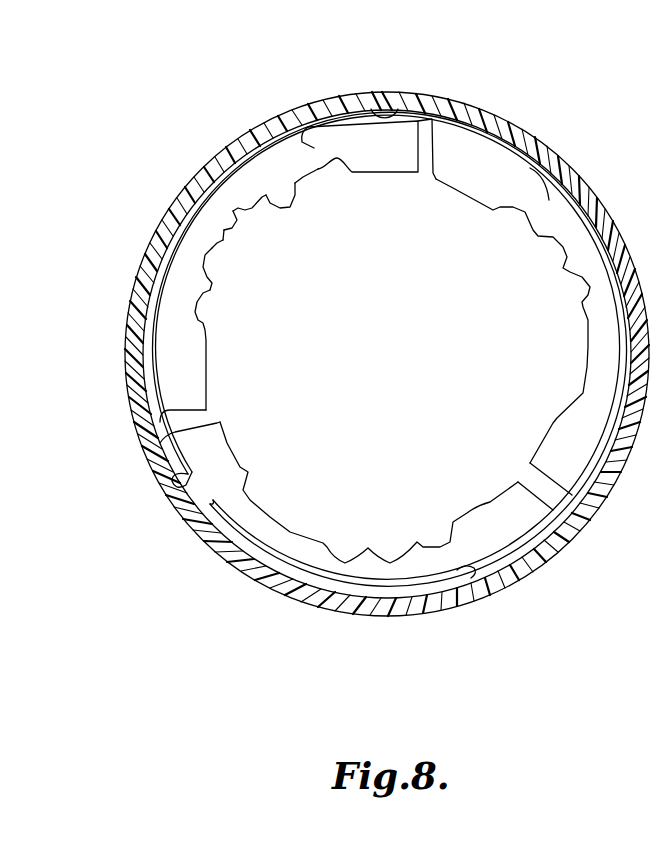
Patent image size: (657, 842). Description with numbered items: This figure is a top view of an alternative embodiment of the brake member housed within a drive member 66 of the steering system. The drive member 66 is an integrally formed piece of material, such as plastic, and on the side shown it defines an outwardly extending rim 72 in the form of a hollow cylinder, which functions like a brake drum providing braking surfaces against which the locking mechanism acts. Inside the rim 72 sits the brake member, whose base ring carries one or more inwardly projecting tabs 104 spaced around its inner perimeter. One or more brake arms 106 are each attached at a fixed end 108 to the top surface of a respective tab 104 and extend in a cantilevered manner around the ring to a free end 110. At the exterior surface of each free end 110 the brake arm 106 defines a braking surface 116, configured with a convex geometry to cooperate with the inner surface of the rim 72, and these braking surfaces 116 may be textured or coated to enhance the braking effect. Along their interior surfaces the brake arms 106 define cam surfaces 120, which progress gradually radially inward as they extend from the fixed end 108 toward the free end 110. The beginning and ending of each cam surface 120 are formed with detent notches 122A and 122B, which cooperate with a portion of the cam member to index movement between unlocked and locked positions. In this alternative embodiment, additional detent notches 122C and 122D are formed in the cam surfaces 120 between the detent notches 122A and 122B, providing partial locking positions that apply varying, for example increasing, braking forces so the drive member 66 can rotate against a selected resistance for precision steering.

The first drive member 66 is at (560, 134).
The rim 72 is at (427, 617).
The tab 104 is at (361, 123).
The brake arm 106 is at (230, 210).
The fixed end 108 is at (391, 150).
The free end 110 is at (175, 395).
The braking surface 116 is at (152, 383).
The cam surface 120 is at (237, 188).
The detent notch 122A is at (305, 172).
The detent notch 122B is at (206, 281).
The detent notch 122C is at (236, 222).
The detent notch 122D is at (220, 243).